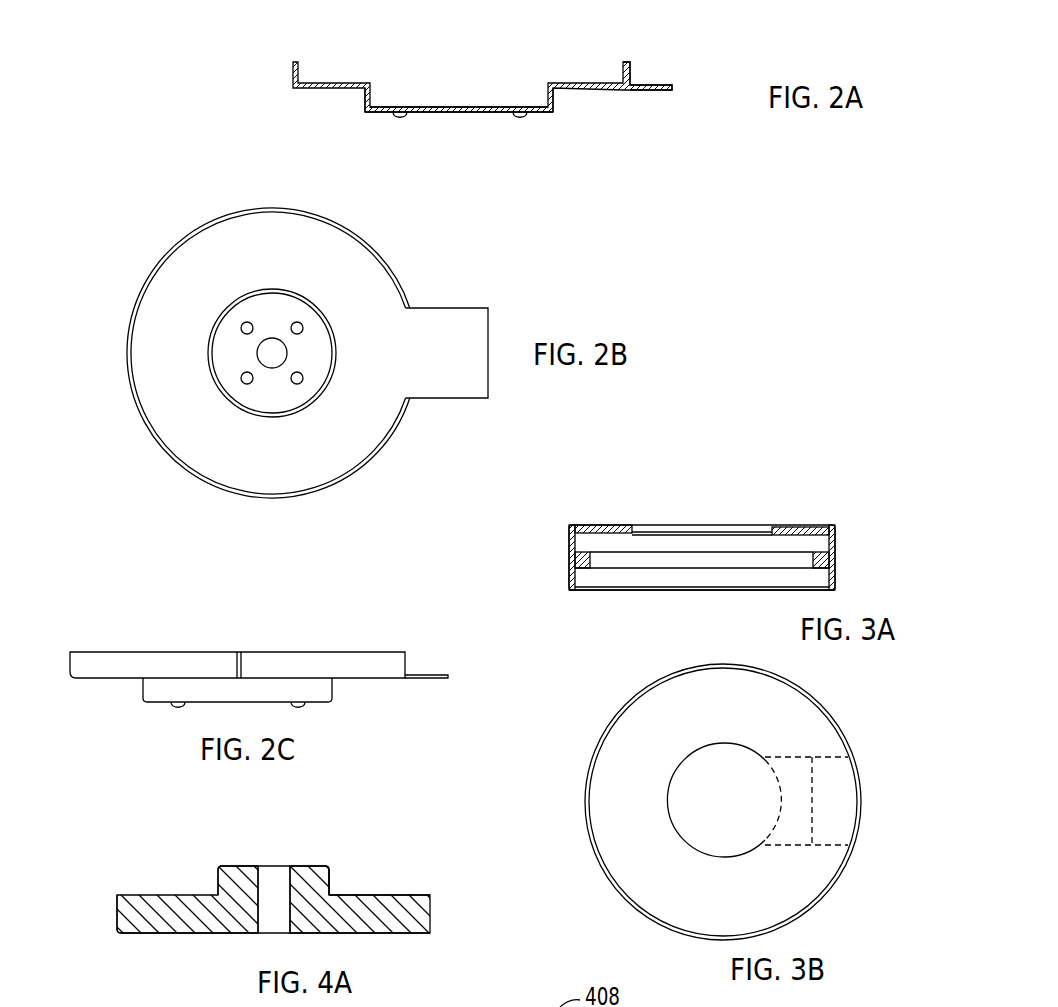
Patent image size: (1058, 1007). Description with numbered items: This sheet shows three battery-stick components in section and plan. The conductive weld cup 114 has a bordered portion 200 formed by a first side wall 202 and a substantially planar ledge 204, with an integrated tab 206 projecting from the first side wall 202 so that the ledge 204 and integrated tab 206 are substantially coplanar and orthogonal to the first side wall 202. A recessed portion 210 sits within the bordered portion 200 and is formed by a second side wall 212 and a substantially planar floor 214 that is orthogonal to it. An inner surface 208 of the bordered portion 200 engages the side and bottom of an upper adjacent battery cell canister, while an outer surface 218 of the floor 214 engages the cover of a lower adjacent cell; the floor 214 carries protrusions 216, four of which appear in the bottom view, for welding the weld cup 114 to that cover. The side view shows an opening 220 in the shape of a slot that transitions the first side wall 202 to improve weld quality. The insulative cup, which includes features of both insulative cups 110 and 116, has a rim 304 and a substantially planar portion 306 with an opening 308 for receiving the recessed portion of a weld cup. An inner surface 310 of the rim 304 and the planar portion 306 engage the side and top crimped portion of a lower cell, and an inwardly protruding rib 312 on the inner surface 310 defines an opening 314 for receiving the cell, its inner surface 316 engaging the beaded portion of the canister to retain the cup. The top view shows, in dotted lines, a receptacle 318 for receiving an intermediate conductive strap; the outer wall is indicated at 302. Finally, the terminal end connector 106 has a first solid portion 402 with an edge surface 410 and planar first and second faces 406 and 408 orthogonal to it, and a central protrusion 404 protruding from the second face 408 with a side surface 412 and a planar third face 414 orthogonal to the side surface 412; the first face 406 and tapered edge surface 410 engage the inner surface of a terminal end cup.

In FIG. 2A, the conductive weld cup 114 is at (429, 93).
In FIG. 2B, the conductive weld cup 114 is at (330, 357).
In FIG. 2C, the conductive weld cup 114 is at (287, 633).
In FIG. 2A, the bordered portion 200 is at (481, 93).
In FIG. 2B, the bordered portion 200 is at (330, 396).
In FIG. 2A, the first side wall 202 is at (496, 68).
In FIG. 2C, the first side wall 202 is at (72, 680).
In FIG. 2A, the ledge 204 is at (613, 90).
In FIG. 2A, the integrated tab 206 is at (672, 85).
In FIG. 2B, the integrated tab 206 is at (470, 308).
In FIG. 2C, the integrated tab 206 is at (430, 675).
In FIG. 2A, the inner surface 208 is at (620, 70).
In FIG. 2A, the recessed portion 210 is at (365, 100).
In FIG. 2B, the recessed portion 210 is at (338, 385).
In FIG. 2A, the second side wall 212 is at (556, 100).
In FIG. 2A, the floor 214 is at (483, 114).
In FIG. 2A, the protrusions 216 is at (400, 118).
In FIG. 2B, the protrusions 216 is at (247, 378).
In FIG. 2A, the outer surface 218 is at (450, 113).
In FIG. 2B, the outer surface 218 is at (312, 342).
In FIG. 2C, the opening 220 is at (240, 652).
In FIG. 3A, the insulative cup 110 is at (699, 497).
In FIG. 3B, the insulative cup 110 is at (680, 822).
In FIG. 3A, the insulative cup 116 is at (699, 497).
In FIG. 3B, the insulative cup 116 is at (680, 822).
In FIG. 3A, the outer shell 302 is at (568, 552).
In FIG. 3B, the outer shell 302 is at (840, 878).
In FIG. 3A, the rim 304 is at (569, 575).
In FIG. 3B, the rim 304 is at (818, 905).
In FIG. 3A, the planar portion 306 is at (600, 525).
In FIG. 3B, the planar portion 306 is at (612, 795).
In FIG. 3A, the opening 308 is at (710, 525).
In FIG. 3B, the opening 308 is at (705, 835).
In FIG. 3A, the inner surface 310 is at (820, 578).
In FIG. 3A, the inwardly protruding rib 312 is at (830, 560).
In FIG. 3A, the opening 314 is at (645, 570).
In FIG. 3A, the inner surface 316 is at (805, 555).
In FIG. 3B, the receptacle 318 is at (850, 790).
In FIG. 4A, the conductive battery stick terminal end connector 106 is at (302, 893).
In FIG. 4A, the first solid portion 402 is at (305, 901).
In FIG. 4A, the central protrusion 404 is at (215, 880).
In FIG. 4A, the first face 406 is at (213, 932).
In FIG. 4A, the second face 408 is at (395, 895).
In FIG. 4A, the edge surface 410 is at (117, 915).
In FIG. 4A, the side surface 412 is at (330, 880).
In FIG. 4A, the third face 414 is at (240, 866).